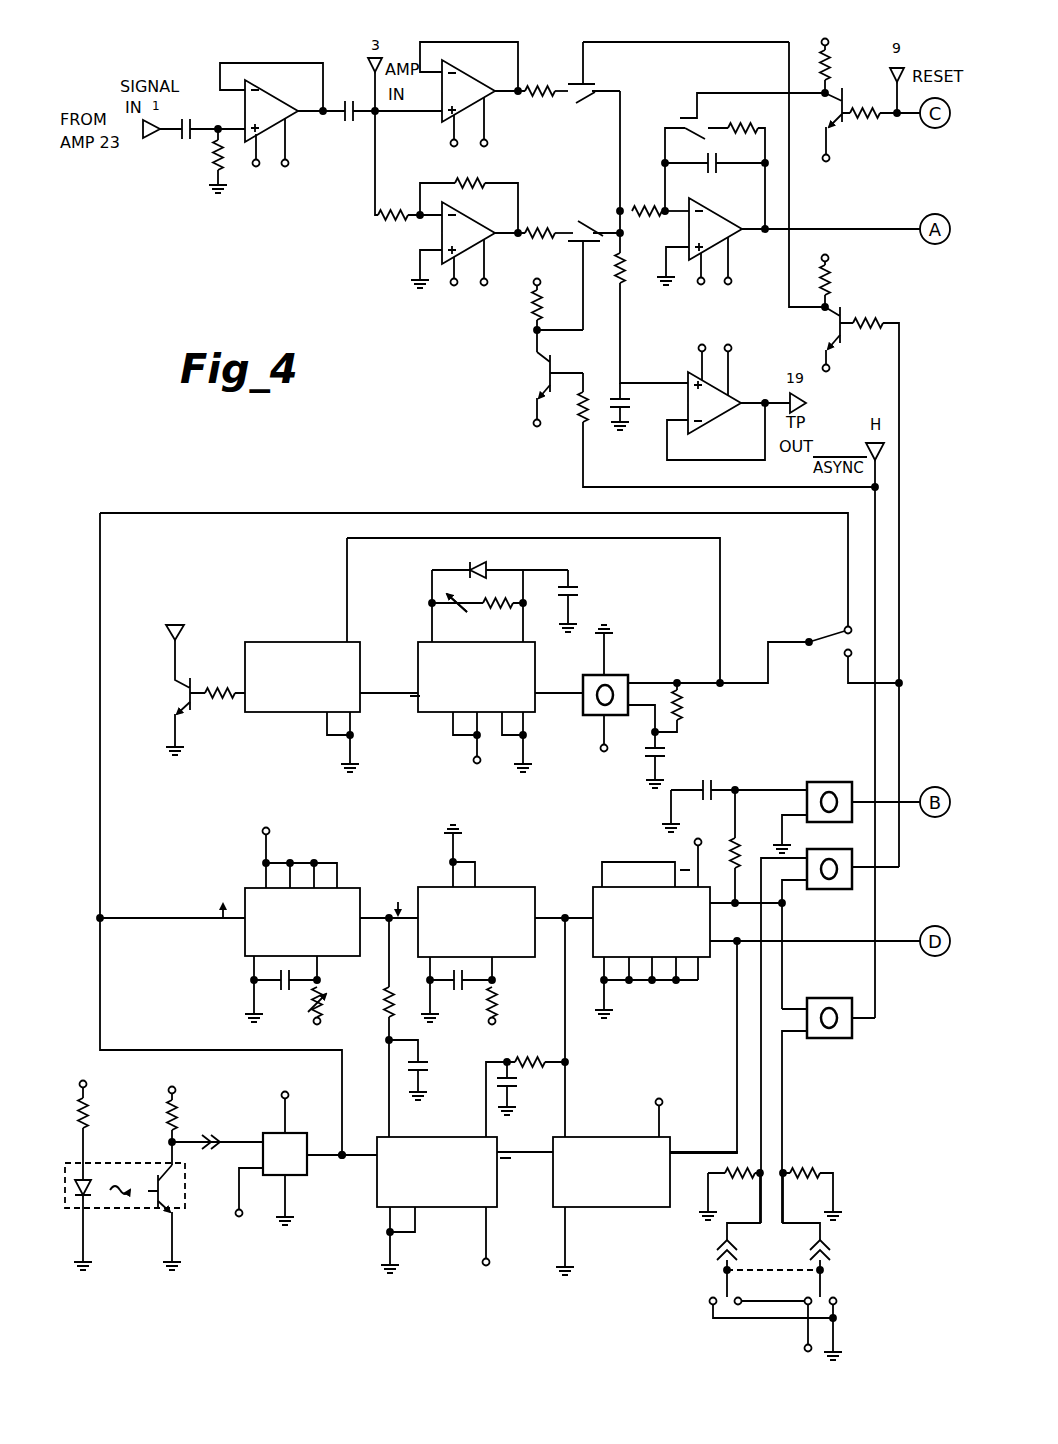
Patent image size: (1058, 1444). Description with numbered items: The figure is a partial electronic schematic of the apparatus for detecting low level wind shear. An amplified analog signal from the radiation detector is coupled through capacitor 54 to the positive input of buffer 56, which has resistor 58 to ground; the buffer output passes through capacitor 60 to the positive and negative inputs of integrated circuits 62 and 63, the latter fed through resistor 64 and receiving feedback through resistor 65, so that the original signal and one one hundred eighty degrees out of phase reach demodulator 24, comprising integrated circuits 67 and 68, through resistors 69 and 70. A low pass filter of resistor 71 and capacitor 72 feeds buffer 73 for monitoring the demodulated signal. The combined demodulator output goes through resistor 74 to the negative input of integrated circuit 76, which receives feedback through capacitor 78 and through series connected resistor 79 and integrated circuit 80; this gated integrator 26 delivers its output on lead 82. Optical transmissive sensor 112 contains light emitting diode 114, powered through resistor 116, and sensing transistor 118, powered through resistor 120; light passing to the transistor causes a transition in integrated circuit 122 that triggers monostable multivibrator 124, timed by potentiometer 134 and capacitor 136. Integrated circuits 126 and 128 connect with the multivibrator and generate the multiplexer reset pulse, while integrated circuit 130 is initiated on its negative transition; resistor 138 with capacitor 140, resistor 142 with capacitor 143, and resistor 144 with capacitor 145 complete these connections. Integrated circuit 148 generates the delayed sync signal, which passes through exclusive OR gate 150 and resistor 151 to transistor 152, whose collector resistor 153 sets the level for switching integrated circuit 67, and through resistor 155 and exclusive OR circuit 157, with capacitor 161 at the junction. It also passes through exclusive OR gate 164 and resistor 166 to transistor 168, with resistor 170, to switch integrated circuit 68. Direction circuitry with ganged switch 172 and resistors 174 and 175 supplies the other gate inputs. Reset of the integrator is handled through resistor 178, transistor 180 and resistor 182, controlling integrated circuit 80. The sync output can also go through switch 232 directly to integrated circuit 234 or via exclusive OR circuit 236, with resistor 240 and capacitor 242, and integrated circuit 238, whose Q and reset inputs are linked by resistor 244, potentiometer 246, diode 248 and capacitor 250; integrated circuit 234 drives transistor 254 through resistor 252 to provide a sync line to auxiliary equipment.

The demodulator 24 is at (565, 56).
The gated integrator 26 is at (742, 37).
The capacitor 54 is at (190, 140).
The buffer 56 is at (270, 92).
The resistor 58 is at (212, 176).
The capacitor 60 is at (352, 122).
The integrated circuit 62 is at (465, 78).
The integrated circuit 63 is at (465, 220).
The resistor 64 is at (400, 222).
The resistor 65 is at (478, 183).
The integrated circuit 67 is at (602, 78).
The integrated circuit 68 is at (608, 222).
The resistor 69 is at (552, 96).
The resistor 70 is at (540, 225).
The resistor 71 is at (624, 275).
The capacitor 72 is at (630, 410).
The buffer 73 is at (703, 421).
The resistor 74 is at (646, 216).
The integrated circuit 76 is at (702, 196).
The capacitor 78 is at (723, 170).
The resistor 79 is at (742, 124).
The integrated circuit 80 is at (694, 118).
The lead 82 is at (808, 224).
The optical transmissive sensor 112 is at (180, 1213).
The light emitting diode 114 is at (96, 1197).
The resistor 116 is at (90, 1106).
The sensing transistor 118 is at (182, 1184).
The resistor 120 is at (167, 1120).
The integrated circuit 122 is at (272, 1130).
The monostable multivibrator 124 is at (242, 890).
The integrated circuit 126 is at (377, 1193).
The integrated circuit 128 is at (553, 1193).
The integrated circuit 130 is at (430, 886).
The potentiometer 134 is at (328, 1007).
The capacitor 136 is at (290, 992).
The resistor 138 is at (387, 992).
The capacitor 140 is at (430, 1073).
The resistor 142 is at (515, 1056).
The capacitor 143 is at (518, 1085).
The resistor 144 is at (500, 1000).
The capacitor 145 is at (455, 993).
The integrated circuit 148 is at (592, 902).
The exclusive OR gate 150 is at (847, 890).
The resistor 151 is at (873, 320).
The transistor 152 is at (830, 334).
The resistor 153 is at (836, 280).
The resistor 155 is at (735, 838).
The exclusive OR circuit 157 is at (836, 781).
The capacitor 161 is at (714, 784).
The exclusive OR gate 164 is at (840, 997).
The resistor 166 is at (585, 392).
The transistor 168 is at (547, 384).
The resistor 170 is at (531, 316).
The ganged switch 172 is at (720, 1270).
The resistor 174 is at (728, 1165).
The resistor 175 is at (812, 1167).
The resistor 178 is at (880, 106).
The transistor 180 is at (836, 139).
The resistor 182 is at (832, 66).
The switch 232 is at (815, 638).
The integrated circuit 234 is at (295, 640).
The exclusive OR circuit 236 is at (592, 717).
The integrated circuit 238 is at (433, 713).
The resistor 240 is at (683, 706).
The capacitor 242 is at (668, 752).
The resistor 244 is at (510, 607).
The potentiometer 246 is at (430, 604).
The diode 248 is at (485, 565).
The capacitor 250 is at (578, 585).
The resistor 252 is at (203, 698).
The transistor 254 is at (178, 706).